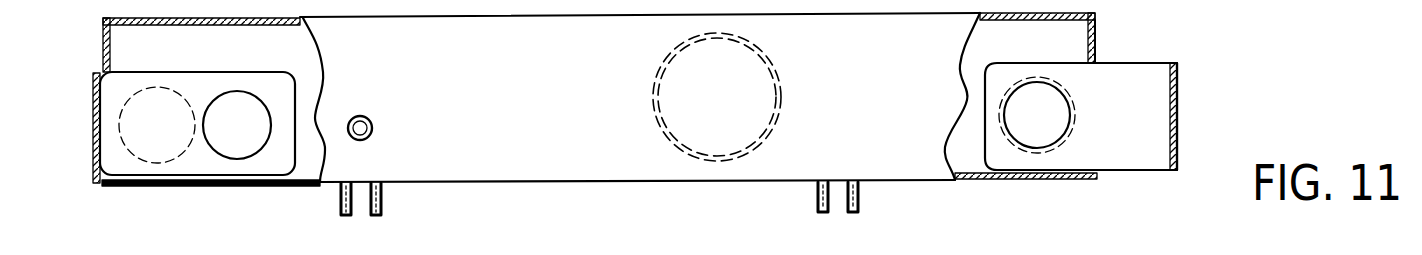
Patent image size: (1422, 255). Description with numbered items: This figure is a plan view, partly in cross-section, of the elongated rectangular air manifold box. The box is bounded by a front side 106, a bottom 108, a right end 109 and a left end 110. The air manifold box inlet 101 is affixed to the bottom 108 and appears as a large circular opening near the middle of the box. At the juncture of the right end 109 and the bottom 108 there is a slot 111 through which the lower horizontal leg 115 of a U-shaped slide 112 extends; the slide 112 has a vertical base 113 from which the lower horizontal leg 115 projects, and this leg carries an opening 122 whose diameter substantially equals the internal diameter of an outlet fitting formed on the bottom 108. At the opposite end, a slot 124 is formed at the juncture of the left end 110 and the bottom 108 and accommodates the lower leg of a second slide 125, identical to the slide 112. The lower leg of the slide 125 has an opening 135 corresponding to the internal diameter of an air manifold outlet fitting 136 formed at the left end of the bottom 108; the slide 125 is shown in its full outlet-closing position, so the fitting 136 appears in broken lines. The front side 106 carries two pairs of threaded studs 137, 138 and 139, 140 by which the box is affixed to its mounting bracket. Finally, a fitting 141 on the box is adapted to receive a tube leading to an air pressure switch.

The air manifold box inlet 101 is at (767, 62).
The front side 106 is at (538, 183).
The bottom 108 is at (126, 47).
The right end 109 is at (1098, 27).
The left end 110 is at (103, 40).
The slot 111 is at (1093, 63).
The U-shaped slide 112 is at (1188, 112).
The vertical base 113 is at (1178, 88).
The lower horizontal leg 115 is at (1127, 163).
The opening 122 is at (1062, 128).
The slot 124 is at (132, 73).
The slide 125 is at (88, 112).
The opening 135 is at (241, 98).
The air manifold outlet fitting 136 is at (124, 143).
The stud 137 is at (817, 200).
The stud 138 is at (860, 200).
The stud 139 is at (382, 206).
The stud 140 is at (340, 200).
The fitting 141 is at (365, 115).